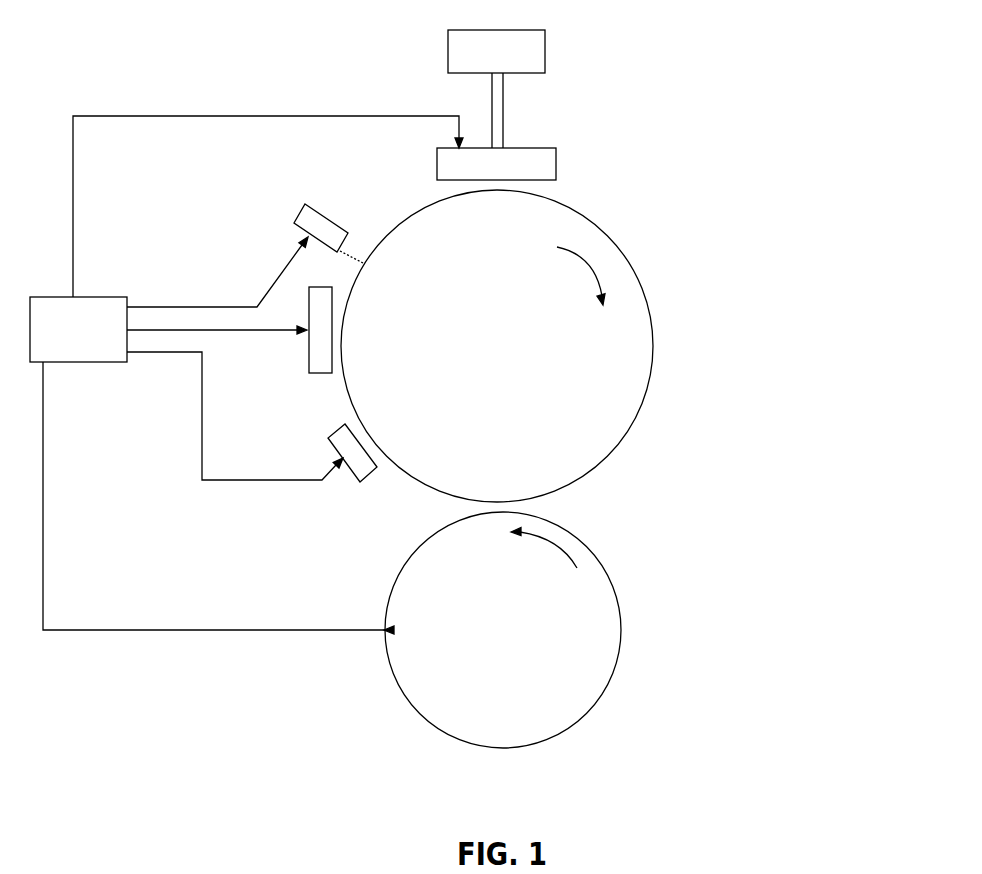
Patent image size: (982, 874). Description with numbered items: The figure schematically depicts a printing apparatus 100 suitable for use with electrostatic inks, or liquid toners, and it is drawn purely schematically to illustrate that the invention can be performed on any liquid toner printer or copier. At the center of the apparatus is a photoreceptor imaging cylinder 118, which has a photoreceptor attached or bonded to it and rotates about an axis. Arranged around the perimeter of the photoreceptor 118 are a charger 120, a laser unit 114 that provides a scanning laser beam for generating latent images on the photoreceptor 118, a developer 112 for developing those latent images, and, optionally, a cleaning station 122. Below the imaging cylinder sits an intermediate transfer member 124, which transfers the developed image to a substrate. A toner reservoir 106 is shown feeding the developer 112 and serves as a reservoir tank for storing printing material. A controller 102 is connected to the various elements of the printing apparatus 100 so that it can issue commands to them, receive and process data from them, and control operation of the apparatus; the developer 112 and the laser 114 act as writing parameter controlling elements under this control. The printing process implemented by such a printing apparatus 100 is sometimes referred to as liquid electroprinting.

The printing apparatus 100 is at (789, 515).
The controller 102 is at (83, 352).
The toner reservoir 106 is at (537, 42).
The developer 112 is at (548, 157).
The laser unit 114 is at (297, 223).
The photoreceptor imaging cylinder 118 is at (645, 330).
The charger 120 is at (318, 364).
The cleaning station 122 is at (342, 435).
The intermediate transfer member 124 is at (598, 650).